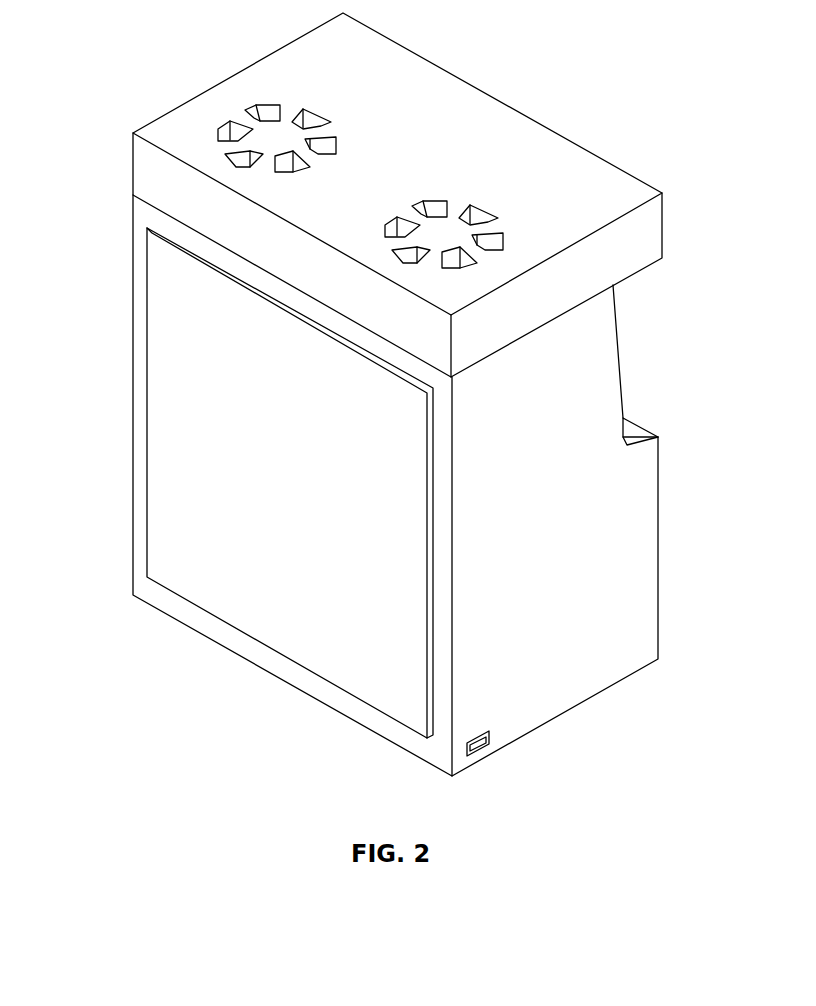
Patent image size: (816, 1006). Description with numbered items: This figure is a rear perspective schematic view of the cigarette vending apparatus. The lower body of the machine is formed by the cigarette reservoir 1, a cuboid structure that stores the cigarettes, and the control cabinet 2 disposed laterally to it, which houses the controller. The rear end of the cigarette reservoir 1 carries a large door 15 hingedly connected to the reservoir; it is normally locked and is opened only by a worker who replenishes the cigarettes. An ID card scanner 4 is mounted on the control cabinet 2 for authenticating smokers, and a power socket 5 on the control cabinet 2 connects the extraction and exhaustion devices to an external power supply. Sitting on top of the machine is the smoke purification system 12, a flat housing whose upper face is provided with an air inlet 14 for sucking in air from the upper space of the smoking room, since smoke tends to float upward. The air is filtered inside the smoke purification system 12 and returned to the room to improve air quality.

The cigarette reservoir 1 is at (349, 471).
The control cabinet 2 is at (590, 606).
The ID card scanner 4 is at (669, 407).
The power socket 5 is at (517, 762).
The smoke purification system 12 is at (397, 195).
The air inlet 14 is at (329, 144).
The door 15 is at (236, 483).